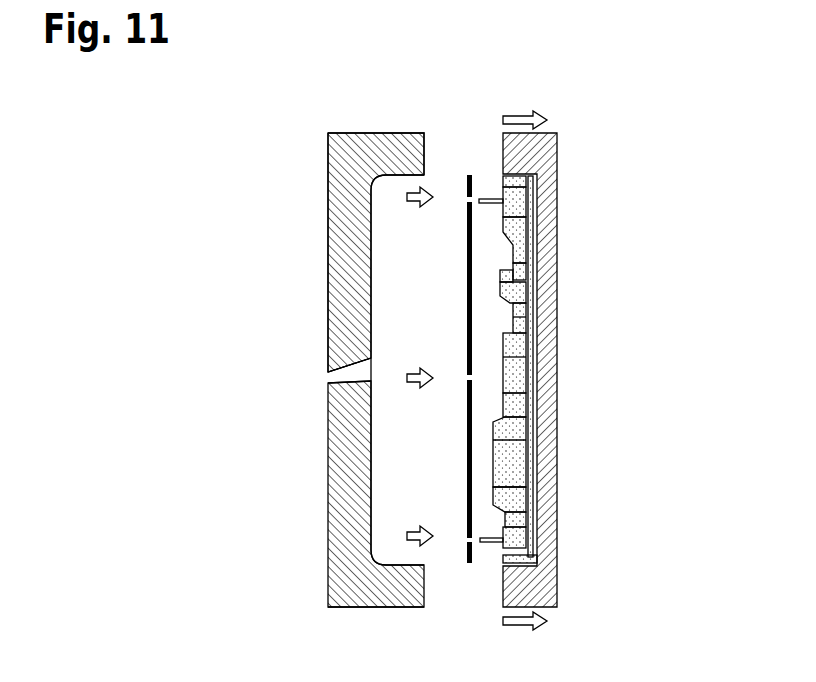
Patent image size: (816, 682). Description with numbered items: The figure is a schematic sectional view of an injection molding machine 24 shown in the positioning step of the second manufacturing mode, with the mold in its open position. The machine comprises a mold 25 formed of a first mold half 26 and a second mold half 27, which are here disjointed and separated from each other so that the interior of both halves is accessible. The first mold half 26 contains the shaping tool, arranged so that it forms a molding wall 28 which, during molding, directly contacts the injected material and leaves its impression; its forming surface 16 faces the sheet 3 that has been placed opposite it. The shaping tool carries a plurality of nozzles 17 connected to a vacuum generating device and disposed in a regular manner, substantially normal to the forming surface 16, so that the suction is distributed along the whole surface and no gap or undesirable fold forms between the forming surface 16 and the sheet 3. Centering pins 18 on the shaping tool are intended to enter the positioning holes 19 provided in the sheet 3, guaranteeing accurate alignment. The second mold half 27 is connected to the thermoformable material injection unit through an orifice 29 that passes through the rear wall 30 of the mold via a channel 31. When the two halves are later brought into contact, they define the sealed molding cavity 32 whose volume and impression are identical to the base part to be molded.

The sheet 3 is at (470, 176).
The forming surface 16 is at (507, 298).
The nozzles 17 is at (518, 216).
The centering pins 18 is at (495, 540).
The positioning holes 19 is at (467, 545).
The injection molding machine 24 is at (258, 552).
The mold 25 is at (340, 617).
The first mold half 26 is at (557, 322).
The second mold half 27 is at (328, 266).
The molding wall 28 is at (487, 458).
The orifice 29 is at (330, 382).
The rear wall 30 is at (348, 222).
The channel 31 is at (335, 344).
The molding cavity 32 is at (400, 297).